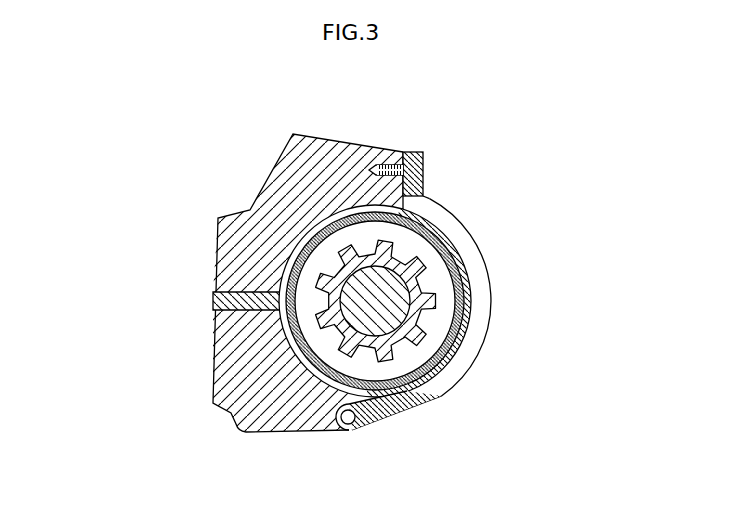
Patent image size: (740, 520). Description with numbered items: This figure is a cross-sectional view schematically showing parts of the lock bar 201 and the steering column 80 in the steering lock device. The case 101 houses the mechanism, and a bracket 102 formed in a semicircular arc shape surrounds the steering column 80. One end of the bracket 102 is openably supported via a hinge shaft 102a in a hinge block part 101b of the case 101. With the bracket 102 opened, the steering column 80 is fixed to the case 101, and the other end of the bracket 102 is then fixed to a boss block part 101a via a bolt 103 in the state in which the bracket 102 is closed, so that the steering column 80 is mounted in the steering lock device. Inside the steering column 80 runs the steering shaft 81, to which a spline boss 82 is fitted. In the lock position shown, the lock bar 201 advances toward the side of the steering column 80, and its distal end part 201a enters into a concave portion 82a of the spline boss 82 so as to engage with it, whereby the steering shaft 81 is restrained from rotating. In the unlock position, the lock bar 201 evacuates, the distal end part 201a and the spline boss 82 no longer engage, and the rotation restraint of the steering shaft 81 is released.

The case 101 is at (285, 180).
The boss block part 101a is at (332, 146).
The hinge block part 101b is at (298, 420).
The bolt 103 is at (422, 172).
The lock bar 201 is at (213, 304).
The distal end part 201a is at (290, 292).
The bracket 102 is at (460, 241).
The hinge shaft 102a is at (350, 419).
The spline boss 82 is at (418, 287).
The concave portion 82a is at (332, 292).
The steering column 80 is at (460, 308).
The steering shaft 81 is at (398, 312).